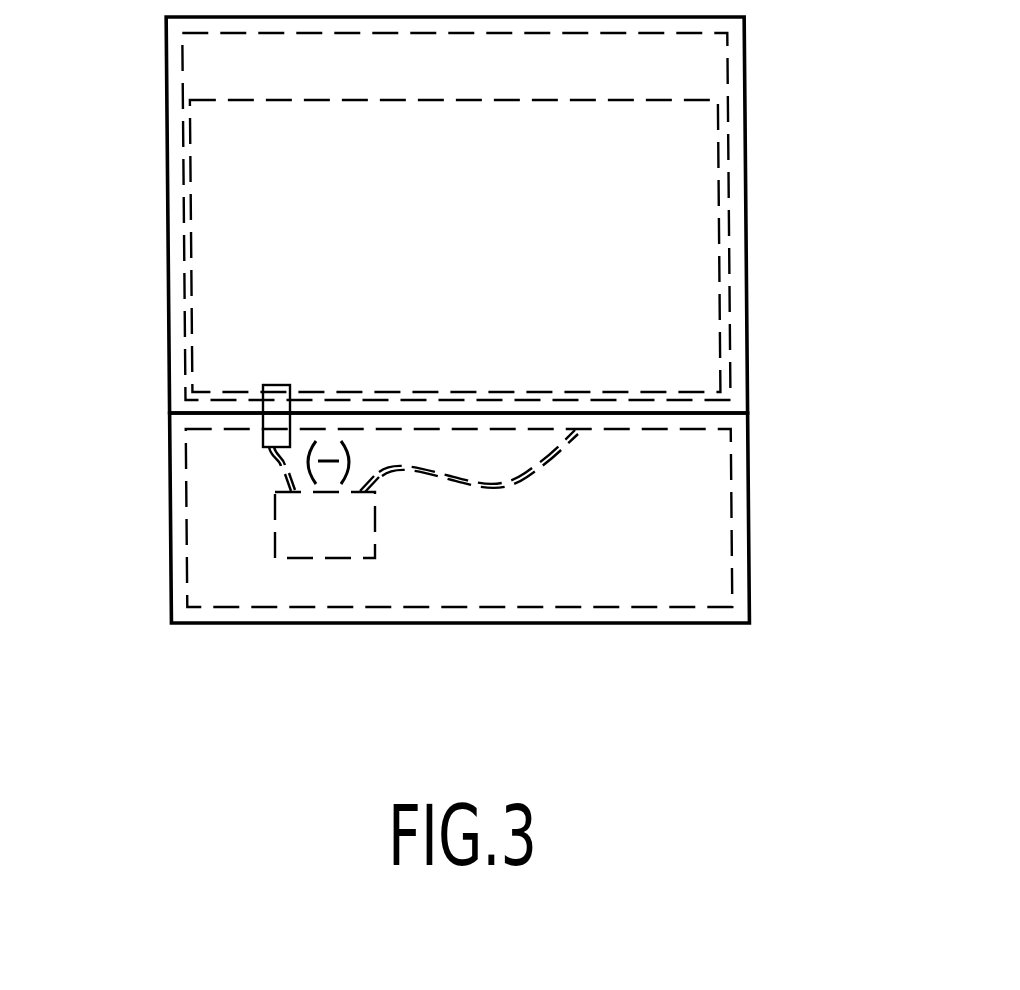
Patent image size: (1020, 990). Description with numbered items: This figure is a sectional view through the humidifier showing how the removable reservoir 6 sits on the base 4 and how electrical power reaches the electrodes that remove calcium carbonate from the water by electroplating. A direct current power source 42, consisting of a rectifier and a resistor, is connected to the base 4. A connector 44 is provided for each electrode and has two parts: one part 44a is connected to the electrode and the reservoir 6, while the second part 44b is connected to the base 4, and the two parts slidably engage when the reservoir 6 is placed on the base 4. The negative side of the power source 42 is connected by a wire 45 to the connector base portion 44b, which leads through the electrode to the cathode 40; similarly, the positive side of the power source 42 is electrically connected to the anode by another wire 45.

The base 4 is at (748, 510).
The reservoir 6 is at (746, 250).
The cathode 40 is at (698, 182).
The direct current power source 42 is at (333, 558).
The connector 44 is at (163, 404).
The connector part 44a is at (265, 384).
The connector base portion 44b is at (266, 446).
The wire 45 is at (245, 481).